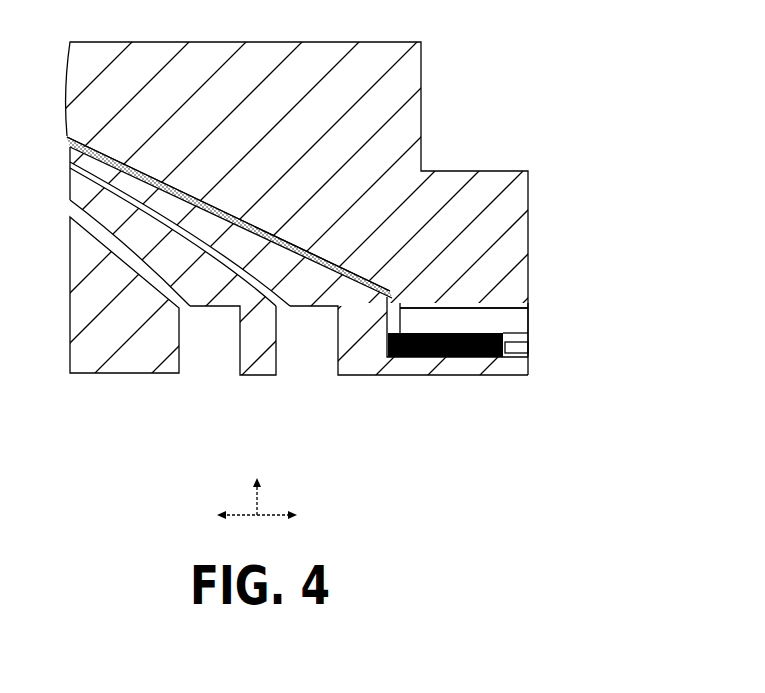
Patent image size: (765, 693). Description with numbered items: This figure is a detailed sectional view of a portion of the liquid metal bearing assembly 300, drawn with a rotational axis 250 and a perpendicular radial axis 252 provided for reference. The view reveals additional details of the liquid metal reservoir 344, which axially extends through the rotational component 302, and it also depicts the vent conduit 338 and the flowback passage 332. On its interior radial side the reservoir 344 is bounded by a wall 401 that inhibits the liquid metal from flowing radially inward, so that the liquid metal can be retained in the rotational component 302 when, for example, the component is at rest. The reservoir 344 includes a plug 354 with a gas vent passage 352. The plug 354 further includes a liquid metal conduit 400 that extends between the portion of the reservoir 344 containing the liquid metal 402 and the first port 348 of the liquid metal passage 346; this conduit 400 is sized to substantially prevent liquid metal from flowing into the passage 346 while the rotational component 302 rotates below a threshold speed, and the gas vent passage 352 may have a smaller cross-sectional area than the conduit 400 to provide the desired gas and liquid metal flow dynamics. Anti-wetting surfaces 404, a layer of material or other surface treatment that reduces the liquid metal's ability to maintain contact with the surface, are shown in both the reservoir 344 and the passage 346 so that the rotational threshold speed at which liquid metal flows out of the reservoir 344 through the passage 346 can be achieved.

The liquid metal bearing assembly 300 is at (538, 41).
The rotational component 302 is at (444, 108).
The flowback passage 332 is at (127, 265).
The vent conduit 338 is at (188, 240).
The liquid metal reservoir 344 is at (451, 372).
The liquid metal passage 346 is at (351, 270).
The first port 348 is at (405, 295).
The gas vent passage 352 is at (530, 341).
The plug 354 is at (520, 333).
The liquid metal conduit 400 is at (405, 316).
The wall 401 is at (471, 376).
The liquid metal 402 is at (396, 347).
The anti-wetting surfaces 404 is at (309, 252).
The rotational axis 250 is at (278, 517).
The radial axis 252 is at (260, 501).